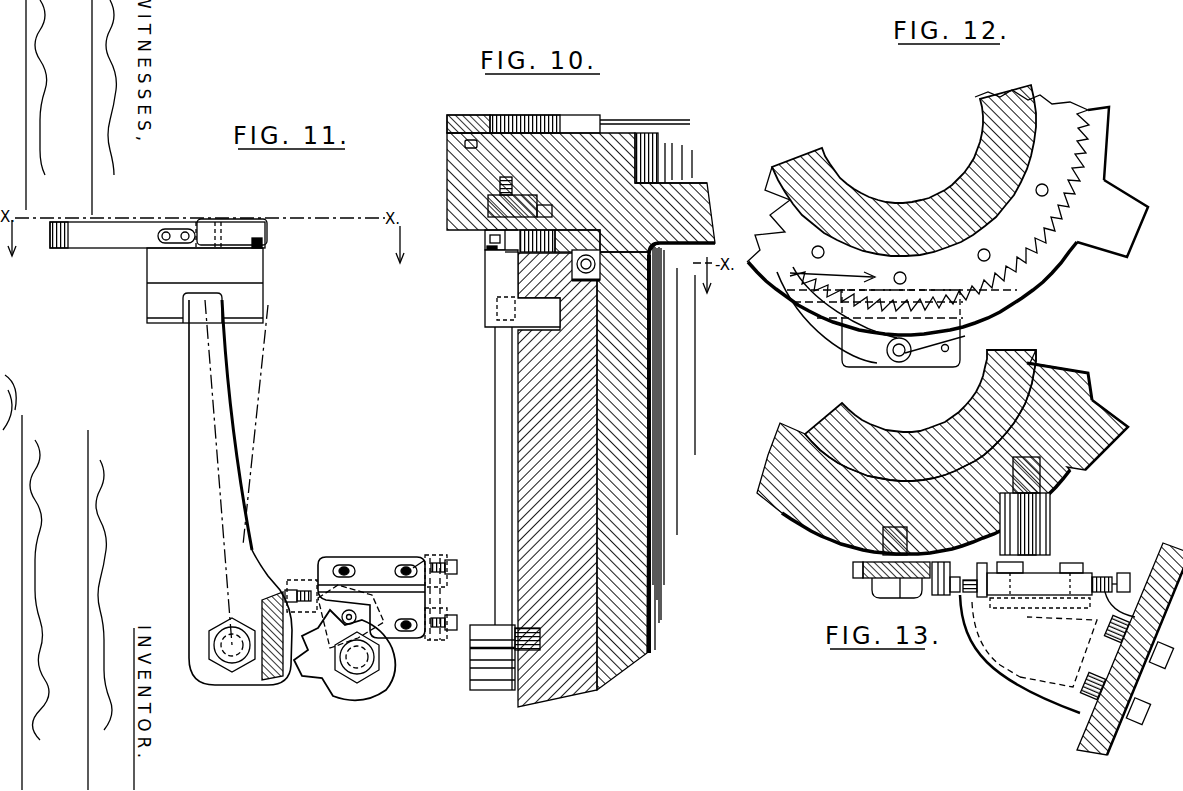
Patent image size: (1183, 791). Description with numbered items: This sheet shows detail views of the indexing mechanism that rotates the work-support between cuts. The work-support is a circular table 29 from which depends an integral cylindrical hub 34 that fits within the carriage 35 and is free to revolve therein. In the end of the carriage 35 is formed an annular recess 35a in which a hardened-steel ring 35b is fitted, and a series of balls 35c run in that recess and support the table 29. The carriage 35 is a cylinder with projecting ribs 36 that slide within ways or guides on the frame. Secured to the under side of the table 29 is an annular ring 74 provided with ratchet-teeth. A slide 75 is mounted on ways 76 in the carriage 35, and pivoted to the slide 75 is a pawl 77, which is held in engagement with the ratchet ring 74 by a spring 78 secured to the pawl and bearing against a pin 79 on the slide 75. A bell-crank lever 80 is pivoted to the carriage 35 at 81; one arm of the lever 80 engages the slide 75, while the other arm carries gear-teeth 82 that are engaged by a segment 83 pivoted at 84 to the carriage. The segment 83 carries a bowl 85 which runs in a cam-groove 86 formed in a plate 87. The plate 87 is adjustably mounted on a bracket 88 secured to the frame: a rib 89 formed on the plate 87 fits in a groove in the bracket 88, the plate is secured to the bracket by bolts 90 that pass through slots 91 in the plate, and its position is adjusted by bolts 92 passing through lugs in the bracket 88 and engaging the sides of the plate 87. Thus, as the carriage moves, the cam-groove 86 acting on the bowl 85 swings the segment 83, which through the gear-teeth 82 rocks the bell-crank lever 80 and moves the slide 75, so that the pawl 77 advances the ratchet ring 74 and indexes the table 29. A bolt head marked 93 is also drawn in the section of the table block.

In FIG. 10, the circular table 29 is at (456, 165).
In FIG. 10, the cylindrical hub 34 is at (625, 480).
In FIG. 12, the cylindrical hub 34 is at (860, 195).
In FIG. 13, the cylindrical hub 34 is at (862, 423).
In FIG. 10, the carriage 35 is at (528, 443).
In FIG. 12, the carriage 35 is at (1098, 153).
In FIG. 13, the carriage 35 is at (1075, 383).
In FIG. 10, the annular recess 35a is at (660, 300).
In FIG. 10, the hardened-steel ring 35b is at (662, 330).
In FIG. 10, the balls 35c is at (660, 272).
In FIG. 12, the projecting ribs 36 is at (1133, 212).
In FIG. 13, the projecting ribs 36 is at (1110, 423).
In FIG. 10, the annular ring 74 is at (608, 230).
In FIG. 12, the annular ring 74 is at (918, 212).
In FIG. 11, the slide 75 is at (248, 268).
In FIG. 10, the slide 75 is at (487, 270).
In FIG. 12, the slide 75 is at (953, 337).
In FIG. 10, the ways 76 is at (548, 294).
In FIG. 11, the pawl 77 is at (118, 240).
In FIG. 12, the pawl 77 is at (830, 326).
In FIG. 11, the spring 78 is at (266, 229).
In FIG. 10, the spring 78 is at (485, 238).
In FIG. 12, the spring 78 is at (963, 347).
In FIG. 11, the pin 79 is at (264, 246).
In FIG. 10, the pin 79 is at (487, 250).
In FIG. 12, the pin 79 is at (935, 352).
In FIG. 11, the bell-crank lever 80 is at (234, 537).
In FIG. 10, the bell-crank lever 80 is at (496, 410).
In FIG. 13, the bell-crank lever 80 is at (857, 580).
In FIG. 11, the pivot 81 is at (226, 660).
In FIG. 11, the gear-teeth 82 is at (293, 676).
In FIG. 10, the gear-teeth 82 is at (476, 666).
In FIG. 13, the gear-teeth 82 is at (957, 597).
In FIG. 11, the segment 83 is at (345, 692).
In FIG. 13, the segment 83 is at (984, 577).
In FIG. 11, the pivot 84 is at (368, 672).
In FIG. 11, the bowl 85 is at (358, 620).
In FIG. 11, the cam-groove 86 is at (368, 597).
In FIG. 11, the plate 87 is at (367, 560).
In FIG. 13, the bracket 88 is at (1013, 648).
In FIG. 11, the rib 89 is at (441, 595).
In FIG. 13, the bolts 90 is at (1075, 572).
In FIG. 11, the slots 91 is at (414, 566).
In FIG. 13, the slots 91 is at (1080, 580).
In FIG. 11, the adjusting bolts 92 is at (293, 586).
In FIG. 13, the adjusting bolts 92 is at (1125, 572).
In FIG. 10, the bolt 93 is at (540, 208).